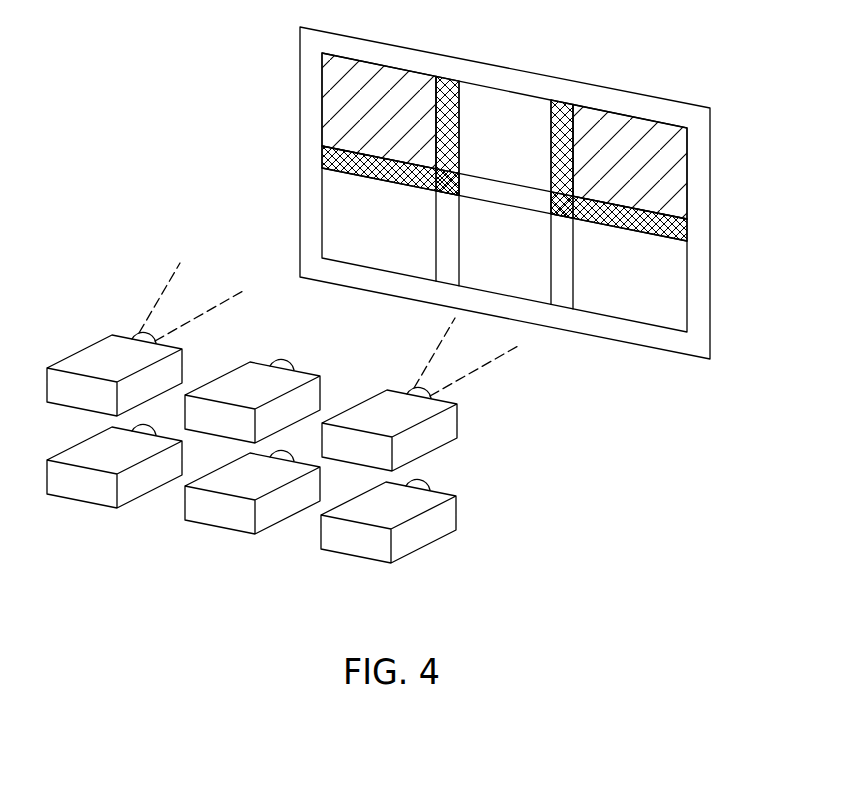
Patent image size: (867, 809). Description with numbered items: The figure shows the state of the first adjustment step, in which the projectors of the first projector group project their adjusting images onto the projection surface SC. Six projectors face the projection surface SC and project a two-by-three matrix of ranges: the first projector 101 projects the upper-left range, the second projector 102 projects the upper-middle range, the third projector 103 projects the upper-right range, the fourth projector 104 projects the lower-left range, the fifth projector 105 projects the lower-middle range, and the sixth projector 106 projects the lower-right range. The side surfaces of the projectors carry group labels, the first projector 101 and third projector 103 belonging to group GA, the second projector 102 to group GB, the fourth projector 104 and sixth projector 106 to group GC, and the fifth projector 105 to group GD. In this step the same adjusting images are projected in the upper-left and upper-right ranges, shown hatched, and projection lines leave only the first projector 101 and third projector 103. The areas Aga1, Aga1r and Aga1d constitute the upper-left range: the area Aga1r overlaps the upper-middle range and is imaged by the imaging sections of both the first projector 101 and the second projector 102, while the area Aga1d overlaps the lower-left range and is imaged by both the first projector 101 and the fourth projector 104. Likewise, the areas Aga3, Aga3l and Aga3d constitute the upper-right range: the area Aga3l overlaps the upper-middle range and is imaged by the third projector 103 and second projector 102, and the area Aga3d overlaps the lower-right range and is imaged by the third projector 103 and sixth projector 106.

The projection surface SC is at (680, 103).
The area Aga1 is at (362, 72).
The overlapping area Aga1r is at (447, 83).
The overlapping area Aga1d is at (323, 157).
The area Aga3 is at (618, 127).
The overlapping area Aga3l is at (563, 113).
The overlapping area Aga3d is at (688, 232).
The first projector 101 is at (112, 335).
The second projector 102 is at (250, 362).
The third projector 103 is at (388, 390).
The fourth projector 104 is at (93, 434).
The fifth projector 105 is at (234, 461).
The sixth projector 106 is at (369, 490).